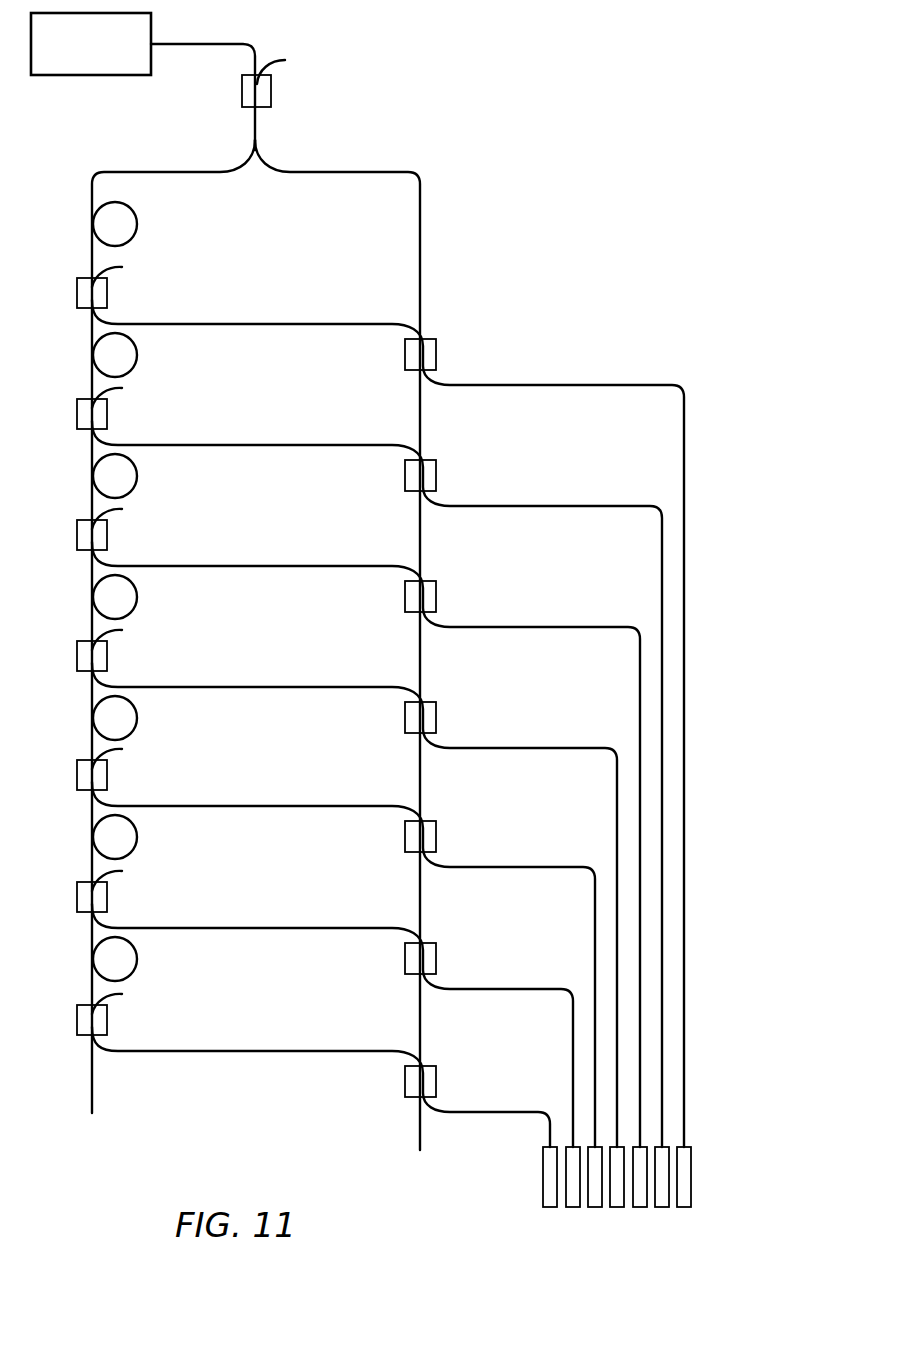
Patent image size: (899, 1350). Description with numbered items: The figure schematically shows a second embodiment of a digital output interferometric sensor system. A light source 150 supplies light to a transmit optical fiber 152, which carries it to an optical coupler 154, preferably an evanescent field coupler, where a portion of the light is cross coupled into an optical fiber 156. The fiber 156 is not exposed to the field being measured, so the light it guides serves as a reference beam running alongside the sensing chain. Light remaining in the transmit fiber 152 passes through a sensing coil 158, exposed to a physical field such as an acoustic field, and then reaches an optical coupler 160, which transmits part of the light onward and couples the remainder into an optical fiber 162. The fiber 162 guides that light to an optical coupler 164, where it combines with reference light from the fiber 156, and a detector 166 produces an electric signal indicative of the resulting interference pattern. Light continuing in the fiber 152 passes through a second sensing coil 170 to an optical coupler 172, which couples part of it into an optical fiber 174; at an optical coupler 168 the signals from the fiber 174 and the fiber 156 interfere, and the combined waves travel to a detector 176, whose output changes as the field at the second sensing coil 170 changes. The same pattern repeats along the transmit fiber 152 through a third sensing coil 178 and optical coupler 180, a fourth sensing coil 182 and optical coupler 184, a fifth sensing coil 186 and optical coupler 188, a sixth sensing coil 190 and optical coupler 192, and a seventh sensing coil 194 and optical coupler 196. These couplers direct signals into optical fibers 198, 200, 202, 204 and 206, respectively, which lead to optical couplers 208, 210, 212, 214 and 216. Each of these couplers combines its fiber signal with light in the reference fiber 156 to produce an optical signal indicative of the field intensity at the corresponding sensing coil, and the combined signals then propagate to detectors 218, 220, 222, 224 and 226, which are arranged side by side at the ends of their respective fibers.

The light source 150 is at (127, 76).
The transmit optical fiber 152 is at (216, 44).
The optical coupler 154 is at (271, 92).
The optical fiber 156 is at (380, 172).
The sensing coil 158 is at (161, 211).
The optical coupler 160 is at (107, 293).
The optical fiber 162 is at (262, 324).
The optical coupler 164 is at (436, 347).
The detector 166 is at (691, 1160).
The optical coupler 168 is at (436, 468).
The second sensing coil 170 is at (137, 355).
The optical coupler 172 is at (107, 414).
The optical fiber 174 is at (273, 445).
The detector 176 is at (662, 1208).
The third sensing coil 178 is at (137, 476).
The optical coupler 180 is at (107, 535).
The fourth sensing coil 182 is at (137, 597).
The optical coupler 184 is at (107, 656).
The fifth sensing coil 186 is at (137, 718).
The optical coupler 188 is at (107, 775).
The sixth sensing coil 190 is at (137, 837).
The optical coupler 192 is at (107, 897).
The seventh sensing coil 194 is at (137, 959).
The optical coupler 196 is at (107, 1020).
The optical fiber 198 is at (275, 566).
The optical fiber 200 is at (280, 687).
The optical fiber 202 is at (280, 806).
The optical fiber 204 is at (280, 928).
The optical fiber 206 is at (280, 1051).
The optical coupler 208 is at (436, 589).
The optical coupler 210 is at (436, 710).
The optical coupler 212 is at (436, 829).
The optical coupler 214 is at (436, 951).
The optical coupler 216 is at (436, 1074).
The detector 218 is at (640, 1208).
The detector 220 is at (617, 1208).
The detector 222 is at (595, 1208).
The detector 224 is at (573, 1208).
The detector 226 is at (543, 1167).